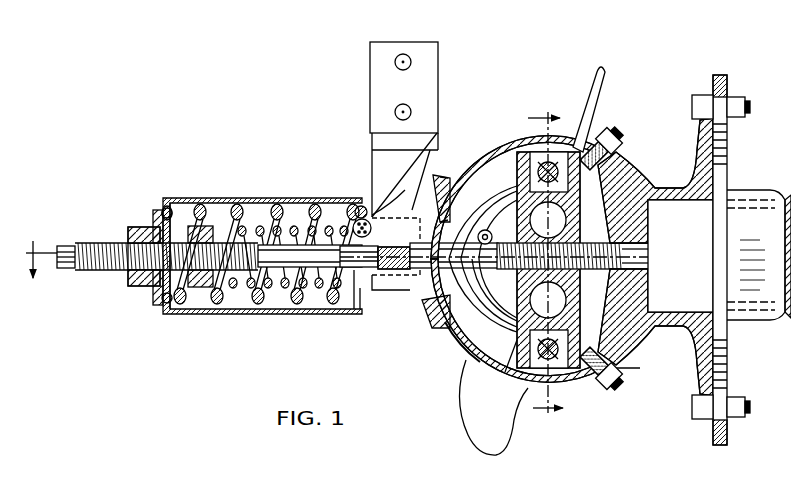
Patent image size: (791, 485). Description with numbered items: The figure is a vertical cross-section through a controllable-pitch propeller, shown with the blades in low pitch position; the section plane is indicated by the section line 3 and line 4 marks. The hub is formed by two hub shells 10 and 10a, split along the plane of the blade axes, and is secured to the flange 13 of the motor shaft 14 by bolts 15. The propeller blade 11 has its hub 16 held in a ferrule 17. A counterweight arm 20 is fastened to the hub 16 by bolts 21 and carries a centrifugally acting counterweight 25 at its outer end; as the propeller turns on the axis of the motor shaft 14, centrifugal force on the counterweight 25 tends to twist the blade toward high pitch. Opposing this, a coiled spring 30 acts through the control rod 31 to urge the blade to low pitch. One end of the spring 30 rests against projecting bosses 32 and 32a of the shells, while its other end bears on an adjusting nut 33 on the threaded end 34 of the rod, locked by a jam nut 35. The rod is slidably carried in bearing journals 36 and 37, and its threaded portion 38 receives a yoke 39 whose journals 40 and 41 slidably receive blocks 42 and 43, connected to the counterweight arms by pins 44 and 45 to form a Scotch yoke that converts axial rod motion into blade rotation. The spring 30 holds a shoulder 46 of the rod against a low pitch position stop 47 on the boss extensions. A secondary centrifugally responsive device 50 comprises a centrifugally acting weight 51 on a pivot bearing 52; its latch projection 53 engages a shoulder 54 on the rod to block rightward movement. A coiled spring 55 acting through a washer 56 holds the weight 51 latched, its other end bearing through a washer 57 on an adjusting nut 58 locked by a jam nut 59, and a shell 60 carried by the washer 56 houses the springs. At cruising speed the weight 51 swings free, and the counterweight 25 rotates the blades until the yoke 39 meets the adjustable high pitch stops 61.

The section line 3 is at (41, 273).
The section line 4 is at (547, 253).
The hub shell 10 is at (638, 168).
The hub shell 10a is at (640, 364).
The propeller blade 11 is at (485, 445).
The flange 13 is at (728, 78).
The motor shaft 14 is at (765, 195).
The bolts 15 is at (698, 108).
The hub 16 is at (500, 153).
The ferrule 17 is at (458, 348).
The counterweight arm 20 is at (469, 232).
The bolts 21 is at (482, 274).
The counterweight 25 is at (378, 72).
The coiled spring 30 is at (262, 232).
The control rod 31 is at (285, 258).
The projecting boss 32 is at (430, 130).
The projecting boss 32a is at (350, 285).
The adjusting nut 33 is at (184, 207).
The threaded end 34 is at (108, 265).
The jam nut 35 is at (165, 212).
The bearing journal 36 is at (447, 180).
The bearing journal 37 is at (640, 185).
The threaded portion 38 is at (508, 272).
The yoke 39 is at (508, 226).
The journal 40 is at (530, 160).
The journal 41 is at (480, 296).
The block 42 is at (544, 165).
The block 43 is at (570, 372).
The pin 44 is at (596, 106).
The pin 45 is at (527, 380).
The shoulder 46 is at (454, 256).
The low pitch position stop 47 is at (394, 259).
The secondary centrifugally responsive device 50 is at (366, 220).
The centrifugally acting weight 51 is at (405, 190).
The pivot bearing 52 is at (385, 230).
The latch projection 53 is at (359, 257).
The shoulder 54 is at (385, 292).
The coiled spring 55 is at (320, 205).
The washer 56 is at (357, 207).
The washer 57 is at (157, 215).
The adjusting nut 58 is at (150, 233).
The jam nut 59 is at (132, 283).
The shell 60 is at (195, 203).
The high pitch stops 61 is at (598, 152).